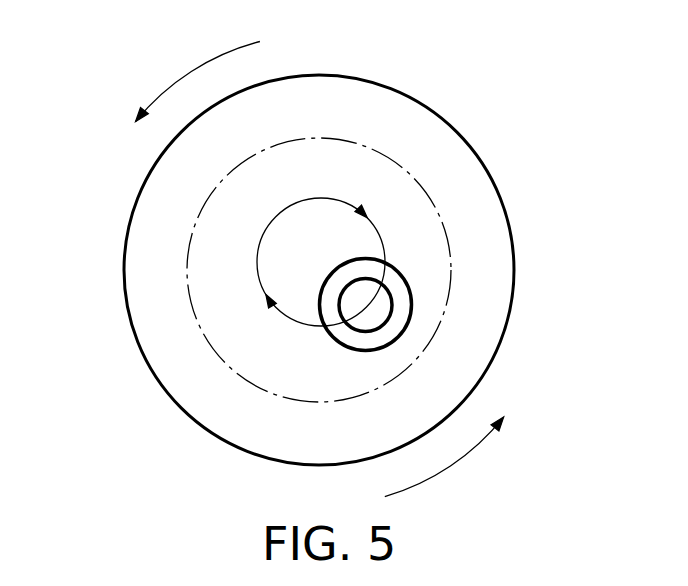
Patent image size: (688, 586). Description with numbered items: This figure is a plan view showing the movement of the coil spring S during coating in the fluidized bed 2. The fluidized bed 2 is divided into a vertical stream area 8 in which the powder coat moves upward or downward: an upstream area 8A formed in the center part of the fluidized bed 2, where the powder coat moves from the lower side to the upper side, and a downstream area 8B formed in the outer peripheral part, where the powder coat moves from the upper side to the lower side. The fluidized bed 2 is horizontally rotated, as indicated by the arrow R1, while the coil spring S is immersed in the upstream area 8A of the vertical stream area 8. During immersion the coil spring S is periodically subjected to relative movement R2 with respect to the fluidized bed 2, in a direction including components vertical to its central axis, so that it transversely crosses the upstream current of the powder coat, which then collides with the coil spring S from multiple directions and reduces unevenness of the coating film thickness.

The fluidized bed 2 is at (355, 110).
The vertical stream area 8 is at (489, 91).
The upstream area 8A is at (403, 197).
The downstream area 8B is at (485, 208).
The coil spring S is at (398, 315).
The arrow R1 is at (310, 269).
The movement R2 is at (255, 253).